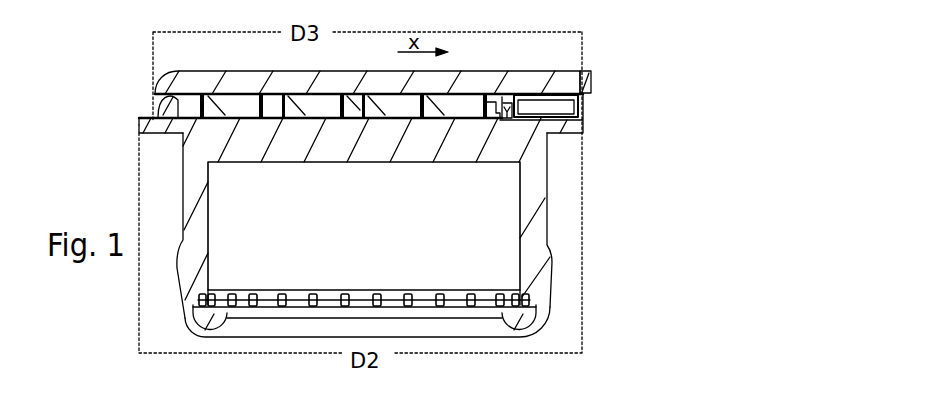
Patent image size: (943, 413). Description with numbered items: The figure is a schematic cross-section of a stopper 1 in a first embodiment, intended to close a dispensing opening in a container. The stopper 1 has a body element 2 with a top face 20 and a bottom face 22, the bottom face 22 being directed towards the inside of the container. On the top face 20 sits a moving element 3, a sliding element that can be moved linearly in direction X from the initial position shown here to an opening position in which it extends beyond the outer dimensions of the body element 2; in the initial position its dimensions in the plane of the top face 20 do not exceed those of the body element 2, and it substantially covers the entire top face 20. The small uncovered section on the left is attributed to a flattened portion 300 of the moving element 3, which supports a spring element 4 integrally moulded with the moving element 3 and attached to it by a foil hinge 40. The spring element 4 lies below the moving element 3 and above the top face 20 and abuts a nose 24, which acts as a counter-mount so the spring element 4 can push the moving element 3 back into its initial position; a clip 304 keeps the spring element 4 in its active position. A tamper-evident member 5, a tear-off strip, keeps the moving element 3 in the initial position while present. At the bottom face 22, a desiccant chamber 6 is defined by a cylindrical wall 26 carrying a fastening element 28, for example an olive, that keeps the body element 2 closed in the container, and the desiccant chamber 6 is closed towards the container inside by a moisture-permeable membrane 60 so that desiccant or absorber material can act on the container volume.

The stopper 1 is at (660, 120).
The flattened portion 300 is at (140, 58).
The moving element 3 is at (458, 84).
The spring element 4 is at (228, 108).
The foil hinge 40 is at (157, 97).
The nose 24 is at (503, 101).
The tamper-evident member 5 is at (592, 81).
The body element 2 is at (535, 173).
The top face 20 is at (148, 118).
The bottom face 22 is at (165, 136).
The clip 304 is at (515, 119).
The fastening element 28 is at (557, 245).
The cylindrical wall 26 is at (535, 258).
The desiccant chamber 6 is at (368, 232).
The moisture-permeable membrane 60 is at (430, 303).